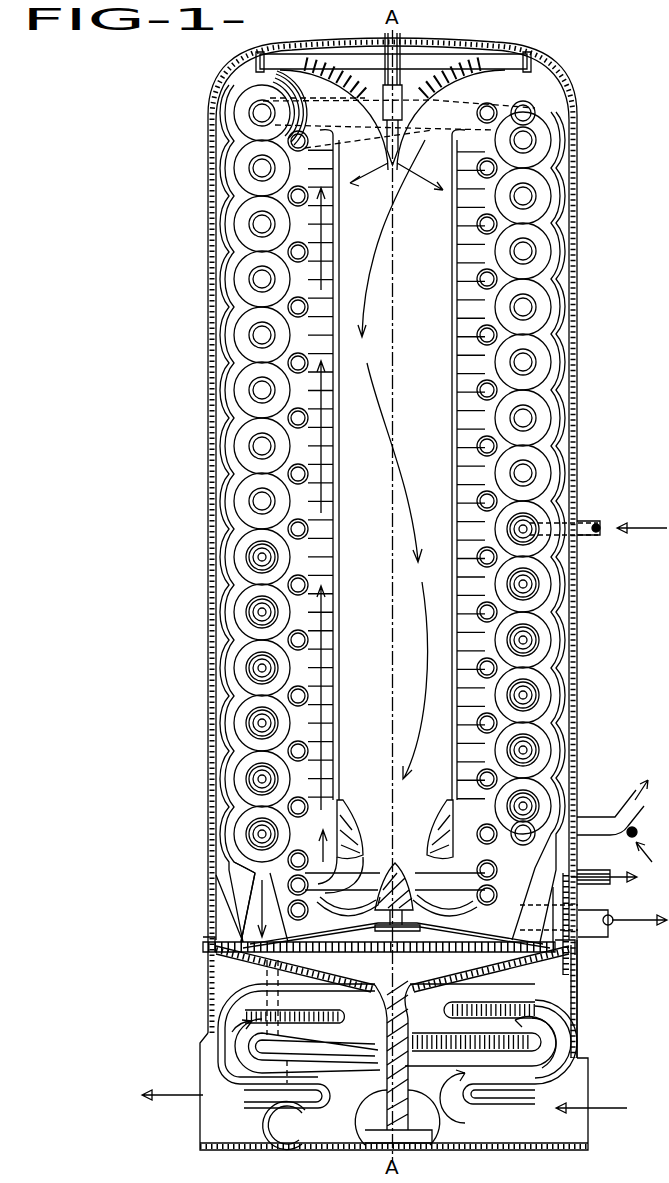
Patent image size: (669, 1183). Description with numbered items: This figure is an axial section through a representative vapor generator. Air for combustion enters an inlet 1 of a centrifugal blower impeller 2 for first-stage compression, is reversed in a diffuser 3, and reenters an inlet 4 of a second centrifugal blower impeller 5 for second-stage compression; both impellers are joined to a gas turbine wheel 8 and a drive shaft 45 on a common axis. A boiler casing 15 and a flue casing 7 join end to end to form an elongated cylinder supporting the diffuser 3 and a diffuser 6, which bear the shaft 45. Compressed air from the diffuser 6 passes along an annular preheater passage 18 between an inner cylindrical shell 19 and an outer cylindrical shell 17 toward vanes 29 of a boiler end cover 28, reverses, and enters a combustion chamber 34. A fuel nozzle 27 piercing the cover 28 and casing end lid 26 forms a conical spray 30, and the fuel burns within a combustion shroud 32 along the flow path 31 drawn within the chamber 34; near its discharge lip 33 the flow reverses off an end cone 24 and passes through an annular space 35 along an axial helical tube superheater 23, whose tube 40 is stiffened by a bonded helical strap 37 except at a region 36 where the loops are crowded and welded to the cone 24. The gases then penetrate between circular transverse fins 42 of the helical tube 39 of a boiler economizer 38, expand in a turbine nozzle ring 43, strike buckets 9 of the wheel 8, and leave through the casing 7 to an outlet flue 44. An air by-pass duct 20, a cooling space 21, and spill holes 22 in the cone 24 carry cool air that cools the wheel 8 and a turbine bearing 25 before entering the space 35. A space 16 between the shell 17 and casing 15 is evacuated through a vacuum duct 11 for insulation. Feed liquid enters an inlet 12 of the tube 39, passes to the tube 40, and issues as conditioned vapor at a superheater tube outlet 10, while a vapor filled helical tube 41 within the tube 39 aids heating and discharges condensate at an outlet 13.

The inlet 1 is at (583, 1088).
The centrifugal blower impeller 2 is at (397, 1063).
The diffuser 3 is at (565, 1035).
The inlet 4 is at (444, 1045).
The centrifugal blower impeller 5 is at (480, 1005).
The diffuser 6 is at (557, 968).
The flue casing 7 is at (580, 998).
The gas turbine wheel 8 is at (303, 1021).
The buckets 9 is at (371, 969).
The superheater tube outlet 10 is at (606, 925).
The vacuum duct 11 is at (615, 880).
The inlet 12 is at (634, 842).
The outlet 13 is at (635, 810).
The boiler casing 15 is at (578, 760).
The space 16 is at (565, 728).
The outer cylindrical shell 17 is at (565, 680).
The annular preheater passage 18 is at (562, 635).
The inner cylindrical shell 19 is at (567, 576).
The air by-pass duct 20 is at (548, 897).
The cooling space 21 is at (468, 925).
The spill holes 22 is at (415, 895).
The axial helical tube superheater 23 is at (560, 420).
The end cone 24 is at (382, 885).
The turbine bearing 25 is at (365, 905).
The casing end lid 26 is at (500, 56).
The fuel nozzle 27 is at (400, 80).
The boiler end cover 28 is at (455, 78).
The vanes 29 is at (300, 72).
The conical spray 30 is at (366, 188).
The gas flow path 31 is at (380, 238).
The combustion shroud 32 is at (452, 332).
The discharge lip 33 is at (392, 790).
The combustion chamber 34 is at (432, 364).
The annular space 35 is at (487, 816).
The region 36 is at (340, 896).
The helical strap 37 is at (338, 782).
The boiler economizer 38 is at (250, 95).
The helical tube 39 is at (250, 117).
The tube 40 is at (275, 150).
The vapor filled helical tube 41 is at (598, 522).
The circular transverse fins 42 is at (325, 110).
The turbine nozzle ring 43 is at (247, 880).
The outlet flue 44 is at (205, 1085).
The drive shaft 45 is at (388, 1133).